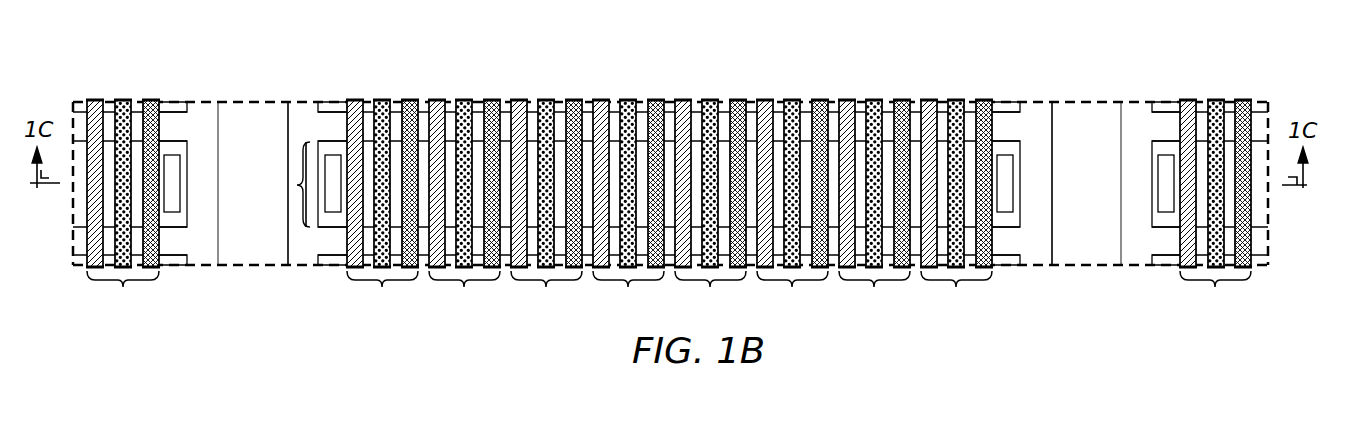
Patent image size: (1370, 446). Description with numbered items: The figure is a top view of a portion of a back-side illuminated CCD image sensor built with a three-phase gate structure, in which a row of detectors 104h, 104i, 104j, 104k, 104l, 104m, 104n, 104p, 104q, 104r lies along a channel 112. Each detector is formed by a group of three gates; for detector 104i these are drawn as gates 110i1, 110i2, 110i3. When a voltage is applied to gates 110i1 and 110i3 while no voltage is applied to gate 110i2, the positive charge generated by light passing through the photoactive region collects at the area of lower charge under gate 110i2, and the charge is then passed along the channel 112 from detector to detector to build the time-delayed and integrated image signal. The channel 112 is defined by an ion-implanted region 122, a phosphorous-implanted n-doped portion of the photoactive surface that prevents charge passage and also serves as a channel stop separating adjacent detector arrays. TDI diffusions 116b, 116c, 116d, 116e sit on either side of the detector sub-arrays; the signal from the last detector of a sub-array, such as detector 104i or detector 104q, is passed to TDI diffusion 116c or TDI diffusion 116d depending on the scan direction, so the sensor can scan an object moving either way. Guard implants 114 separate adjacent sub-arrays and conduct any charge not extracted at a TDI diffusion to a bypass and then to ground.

The detector 104h is at (123, 211).
The detector 104i is at (380, 165).
The detector 104j is at (464, 211).
The detector 104k is at (546, 211).
The detector 104l is at (628, 211).
The detector 104m is at (710, 211).
The detector 104n is at (792, 211).
The detector 104p is at (874, 211).
The detector 104q is at (956, 211).
The detector 104r is at (1215, 211).
The gate 110i1 is at (355, 100).
The gate 110i2 is at (385, 100).
The gate 110i3 is at (410, 100).
The channel 112 is at (285, 184).
The guard implant 114 is at (250, 110).
The TDI diffusion 116b is at (172, 207).
The TDI diffusion 116c is at (333, 207).
The TDI diffusion 116d is at (1005, 207).
The TDI diffusion 116e is at (1165, 207).
The ion-implanted region 122 is at (1028, 110).